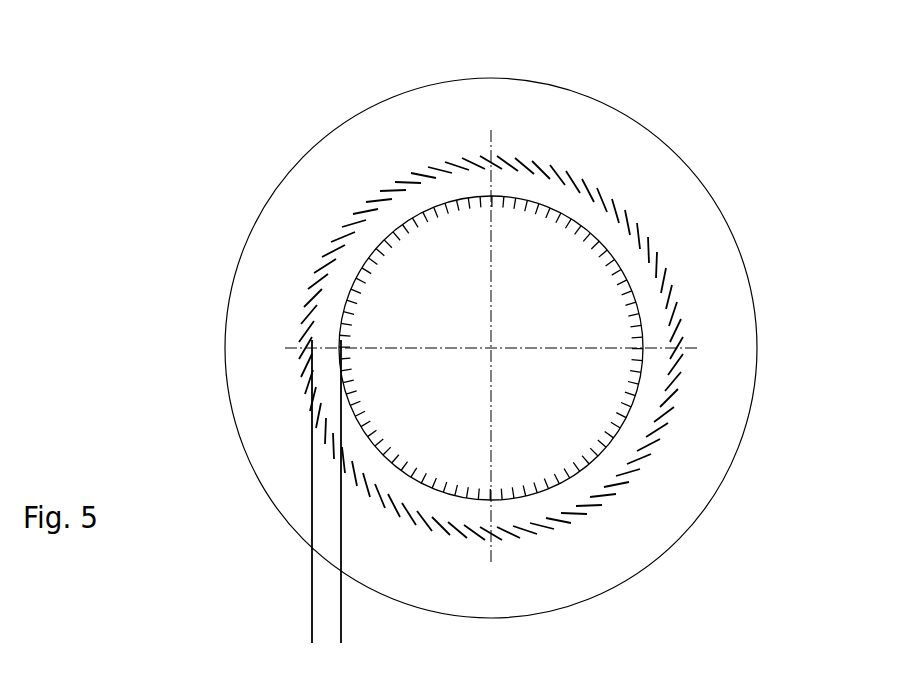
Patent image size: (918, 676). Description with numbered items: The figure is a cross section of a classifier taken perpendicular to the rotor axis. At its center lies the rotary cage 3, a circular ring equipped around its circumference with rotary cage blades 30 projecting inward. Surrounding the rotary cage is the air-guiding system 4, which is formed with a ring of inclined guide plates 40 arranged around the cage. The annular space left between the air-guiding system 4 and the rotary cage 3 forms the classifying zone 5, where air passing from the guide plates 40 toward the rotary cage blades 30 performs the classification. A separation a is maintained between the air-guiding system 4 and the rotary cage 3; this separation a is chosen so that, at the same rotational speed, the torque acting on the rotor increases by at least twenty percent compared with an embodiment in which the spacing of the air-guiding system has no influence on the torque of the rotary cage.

The air-guiding system 4 is at (390, 158).
The guide plates 40 is at (613, 212).
The rotary cage 3 is at (642, 310).
The rotary cage blades 30 is at (618, 287).
The classifying zone 5 is at (653, 330).
The separation a is at (268, 633).